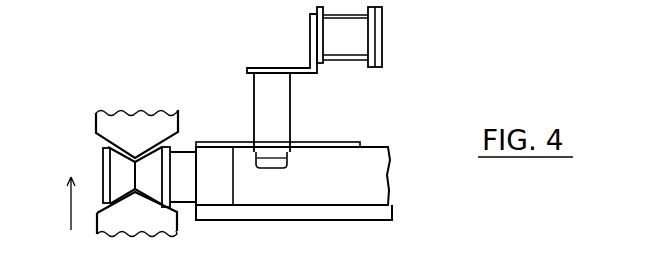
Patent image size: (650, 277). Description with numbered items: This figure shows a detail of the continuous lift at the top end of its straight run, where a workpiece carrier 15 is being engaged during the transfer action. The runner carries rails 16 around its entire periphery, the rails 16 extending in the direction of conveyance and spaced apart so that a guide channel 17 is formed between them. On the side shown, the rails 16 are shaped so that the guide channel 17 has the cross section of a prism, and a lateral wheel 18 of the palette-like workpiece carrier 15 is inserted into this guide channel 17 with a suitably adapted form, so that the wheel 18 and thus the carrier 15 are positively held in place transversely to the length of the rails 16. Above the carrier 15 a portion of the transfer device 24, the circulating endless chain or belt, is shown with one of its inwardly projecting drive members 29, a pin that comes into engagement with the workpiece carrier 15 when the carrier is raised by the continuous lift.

The workpiece carrier 15 is at (378, 191).
The rail 16 is at (157, 118).
The guide channel 17 is at (99, 139).
The lateral wheel 18 is at (120, 170).
The transfer device 24 is at (335, 39).
The drive member 29 is at (281, 93).